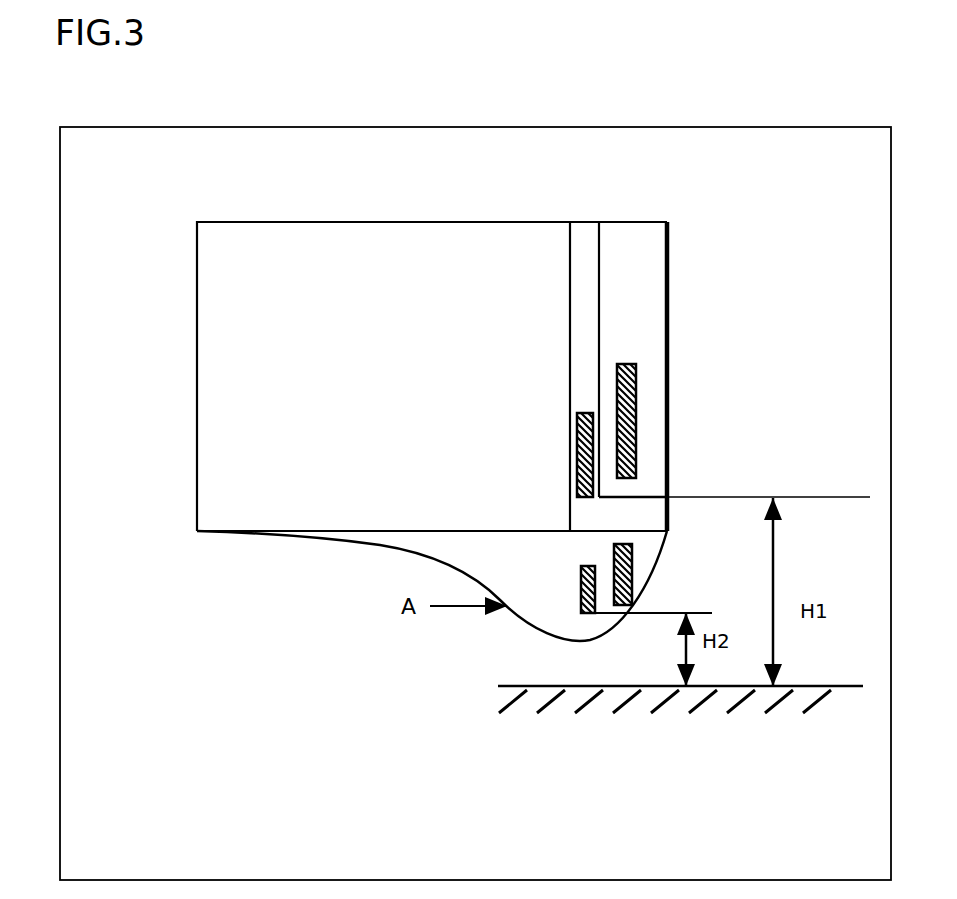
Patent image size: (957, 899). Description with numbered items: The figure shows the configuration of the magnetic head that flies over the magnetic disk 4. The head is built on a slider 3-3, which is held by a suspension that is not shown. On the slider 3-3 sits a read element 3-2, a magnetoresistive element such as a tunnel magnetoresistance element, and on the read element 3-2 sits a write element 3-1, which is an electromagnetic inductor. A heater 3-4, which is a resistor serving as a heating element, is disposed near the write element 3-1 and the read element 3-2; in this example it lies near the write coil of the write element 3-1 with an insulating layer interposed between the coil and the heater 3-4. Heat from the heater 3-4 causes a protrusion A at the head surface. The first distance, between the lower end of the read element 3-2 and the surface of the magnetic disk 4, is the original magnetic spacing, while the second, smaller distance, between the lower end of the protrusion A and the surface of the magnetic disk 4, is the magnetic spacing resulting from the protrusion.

The slider 3-3 is at (322, 285).
The write element 3-1 is at (635, 308).
The heater 3-4 is at (617, 402).
The read element 3-2 is at (590, 480).
The magnetic disk 4 is at (540, 716).